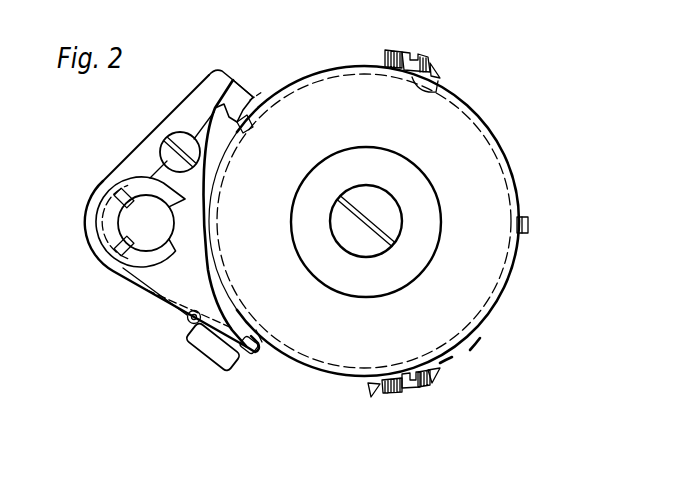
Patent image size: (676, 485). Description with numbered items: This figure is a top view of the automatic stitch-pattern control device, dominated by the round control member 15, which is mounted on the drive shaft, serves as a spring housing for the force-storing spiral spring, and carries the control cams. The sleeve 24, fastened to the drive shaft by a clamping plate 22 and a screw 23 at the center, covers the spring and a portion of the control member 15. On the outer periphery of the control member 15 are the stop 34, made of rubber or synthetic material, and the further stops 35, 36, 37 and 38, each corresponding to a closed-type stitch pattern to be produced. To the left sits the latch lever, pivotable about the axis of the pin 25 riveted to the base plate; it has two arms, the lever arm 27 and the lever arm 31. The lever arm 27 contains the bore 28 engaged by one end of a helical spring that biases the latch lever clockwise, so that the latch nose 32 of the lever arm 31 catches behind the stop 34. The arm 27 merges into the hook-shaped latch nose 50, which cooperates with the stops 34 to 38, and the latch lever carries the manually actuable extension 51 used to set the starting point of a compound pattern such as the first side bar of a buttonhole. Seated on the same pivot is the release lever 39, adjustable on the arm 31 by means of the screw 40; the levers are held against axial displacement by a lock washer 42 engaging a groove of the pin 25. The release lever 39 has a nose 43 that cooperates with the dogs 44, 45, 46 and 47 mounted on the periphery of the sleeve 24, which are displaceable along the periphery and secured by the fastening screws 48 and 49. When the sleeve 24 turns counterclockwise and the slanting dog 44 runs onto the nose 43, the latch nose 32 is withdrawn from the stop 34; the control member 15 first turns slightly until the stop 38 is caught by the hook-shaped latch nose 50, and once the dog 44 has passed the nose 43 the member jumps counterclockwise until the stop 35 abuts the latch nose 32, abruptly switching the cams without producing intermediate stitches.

The control member 15 is at (490, 303).
The clamping plate 22 is at (432, 258).
The screw 23 is at (357, 256).
The sleeve 24 is at (480, 338).
The pin 25 is at (117, 223).
The lever arm 27 is at (133, 280).
The bore 28 is at (190, 322).
The lever arm 31 is at (246, 91).
The latch nose 32 is at (217, 110).
The stop 34 is at (261, 92).
The stop 35 is at (437, 90).
The stop 36 is at (526, 215).
The stop 37 is at (440, 363).
The stop 38 is at (263, 345).
The release lever 39 is at (180, 107).
The screw 40 is at (173, 133).
The lock washer 42 is at (135, 178).
The nose 43 is at (246, 112).
The dog 44 is at (365, 62).
The dog 45 is at (438, 66).
The dog 46 is at (430, 383).
The dog 47 is at (373, 393).
The fastening screw 48 is at (418, 57).
The fastening screw 49 is at (417, 388).
The hook-shaped latch nose 50 is at (242, 350).
The manually actuable extension 51 is at (207, 367).